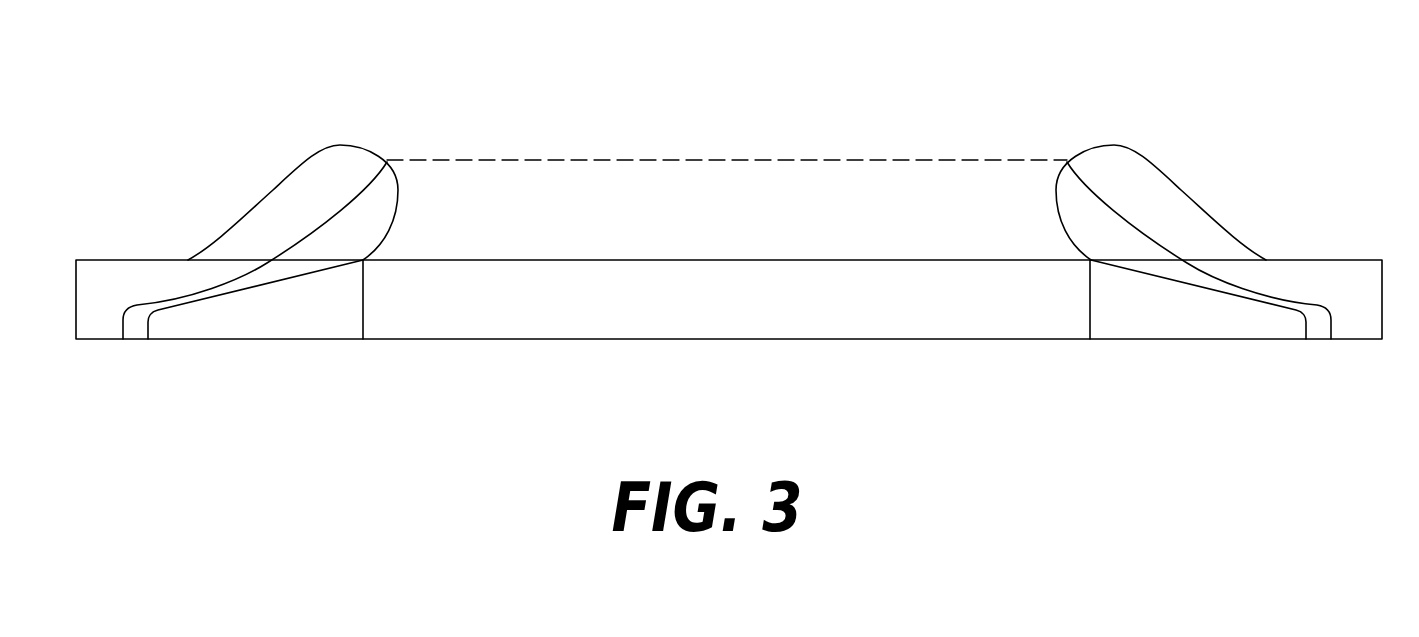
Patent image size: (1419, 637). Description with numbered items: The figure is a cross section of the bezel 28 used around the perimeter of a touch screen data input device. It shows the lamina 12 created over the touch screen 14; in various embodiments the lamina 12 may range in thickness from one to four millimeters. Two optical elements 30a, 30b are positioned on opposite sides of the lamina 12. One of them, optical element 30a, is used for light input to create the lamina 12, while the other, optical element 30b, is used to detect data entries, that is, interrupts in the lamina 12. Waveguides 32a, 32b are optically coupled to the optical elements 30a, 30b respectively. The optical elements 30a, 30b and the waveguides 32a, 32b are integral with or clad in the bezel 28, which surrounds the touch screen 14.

The lamina 12 is at (727, 193).
The touch screen 14 is at (713, 327).
The bezel 28 is at (393, 118).
The optical element 30a is at (380, 220).
The optical element 30b is at (1080, 220).
The waveguide 32a is at (250, 280).
The waveguide 32b is at (1223, 278).